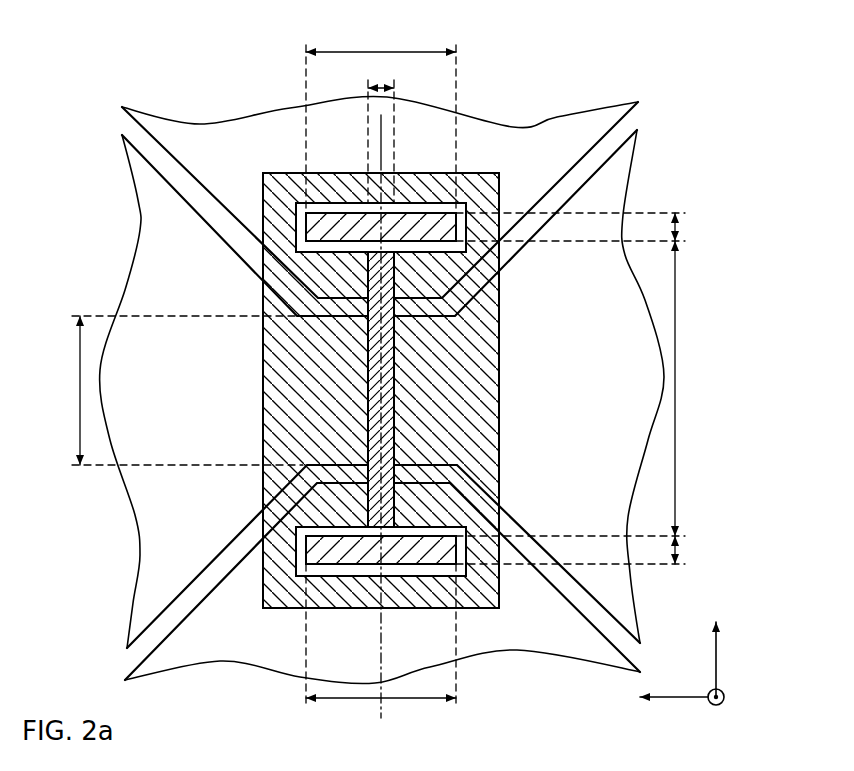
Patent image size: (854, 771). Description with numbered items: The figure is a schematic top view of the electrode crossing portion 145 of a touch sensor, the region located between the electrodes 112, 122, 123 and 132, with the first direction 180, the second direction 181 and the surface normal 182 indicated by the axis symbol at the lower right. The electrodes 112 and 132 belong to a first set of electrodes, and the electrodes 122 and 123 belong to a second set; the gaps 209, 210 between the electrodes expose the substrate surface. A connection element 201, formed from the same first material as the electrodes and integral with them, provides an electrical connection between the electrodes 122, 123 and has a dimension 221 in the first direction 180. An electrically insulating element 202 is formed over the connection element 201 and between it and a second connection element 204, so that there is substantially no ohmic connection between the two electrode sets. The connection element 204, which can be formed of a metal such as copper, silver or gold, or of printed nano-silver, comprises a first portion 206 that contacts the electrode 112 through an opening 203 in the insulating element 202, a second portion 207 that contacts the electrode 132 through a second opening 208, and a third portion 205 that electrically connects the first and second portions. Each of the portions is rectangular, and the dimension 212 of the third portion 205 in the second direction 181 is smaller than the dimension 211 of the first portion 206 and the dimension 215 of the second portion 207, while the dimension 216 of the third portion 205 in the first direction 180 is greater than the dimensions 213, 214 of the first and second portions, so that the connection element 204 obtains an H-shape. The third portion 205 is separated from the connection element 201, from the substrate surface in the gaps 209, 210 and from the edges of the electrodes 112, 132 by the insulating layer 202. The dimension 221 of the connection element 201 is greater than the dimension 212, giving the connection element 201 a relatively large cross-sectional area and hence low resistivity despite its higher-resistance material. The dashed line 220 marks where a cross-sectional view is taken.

The connection element 201 is at (455, 387).
The electrically insulating element 202 is at (499, 440).
The opening 203 is at (413, 203).
The connection element 204 is at (352, 359).
The third portion 205 is at (367, 397).
The first portion 206 is at (332, 213).
The second portion 207 is at (333, 564).
The opening 208 is at (413, 576).
The gap 209 is at (128, 128).
The gap 210 is at (128, 660).
The dimension 211 is at (355, 52).
The dimension 212 is at (390, 88).
The dimension 213 is at (678, 227).
The dimension 214 is at (677, 549).
The dimension 215 is at (381, 656).
The dimension 216 is at (677, 328).
The dashed line 220 is at (381, 720).
The dimension 221 is at (78, 393).
The electrode 112 is at (281, 154).
The electrode 122 is at (198, 296).
The electrode 123 is at (583, 311).
The electrode 132 is at (546, 637).
The electrode crossing portion 145 is at (692, 112).
The first direction 180 is at (719, 650).
The second direction 181 is at (686, 705).
The surface normal 182 is at (725, 697).